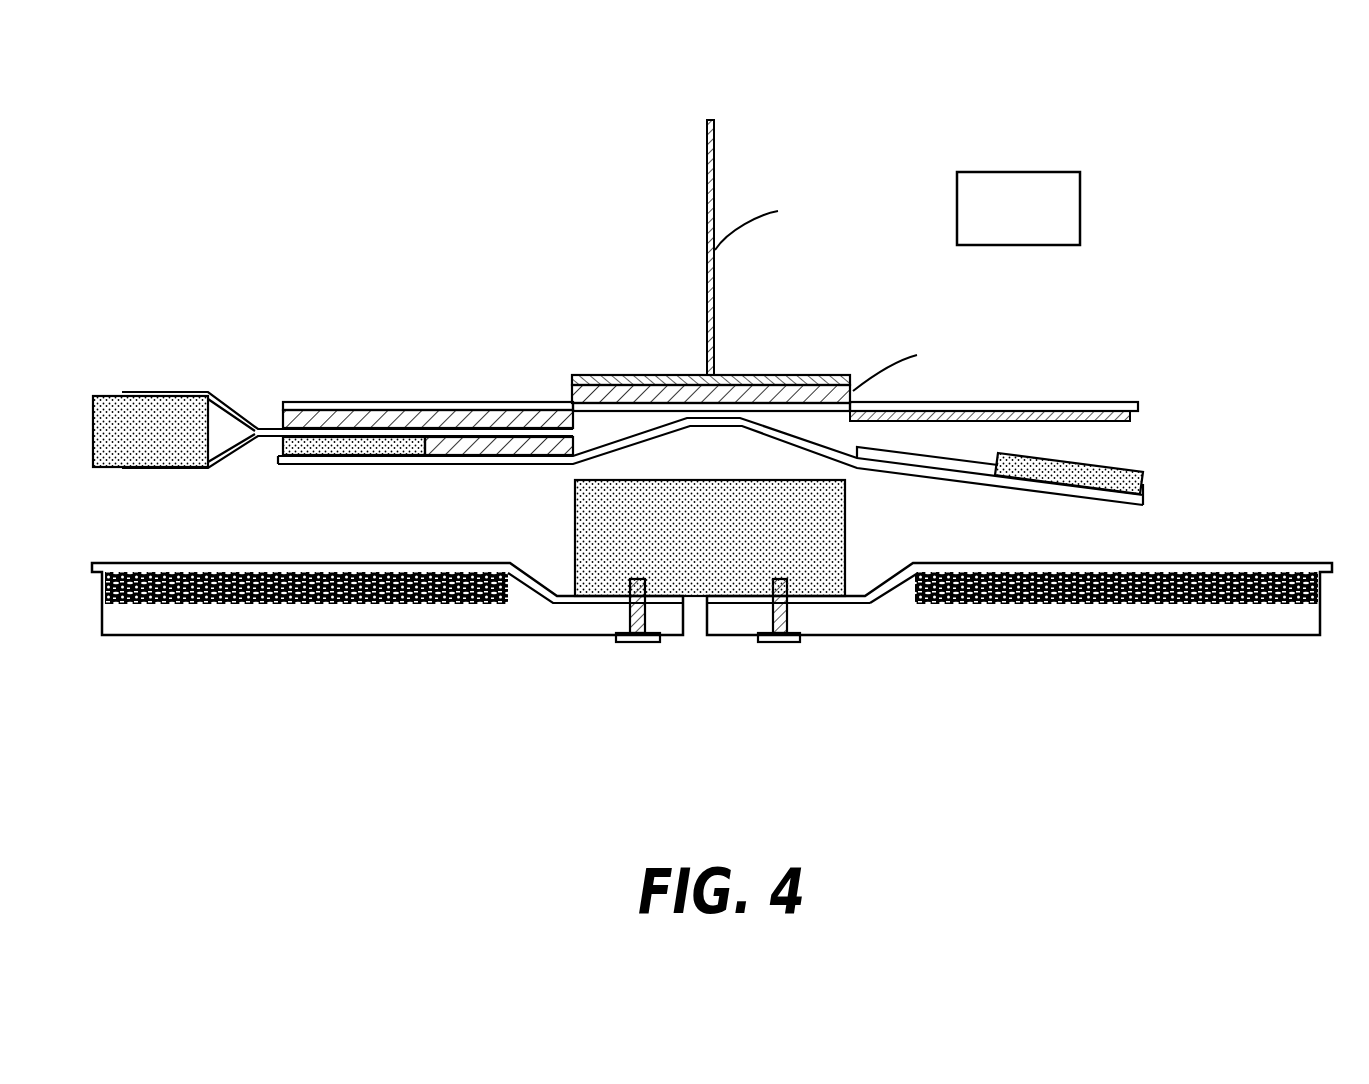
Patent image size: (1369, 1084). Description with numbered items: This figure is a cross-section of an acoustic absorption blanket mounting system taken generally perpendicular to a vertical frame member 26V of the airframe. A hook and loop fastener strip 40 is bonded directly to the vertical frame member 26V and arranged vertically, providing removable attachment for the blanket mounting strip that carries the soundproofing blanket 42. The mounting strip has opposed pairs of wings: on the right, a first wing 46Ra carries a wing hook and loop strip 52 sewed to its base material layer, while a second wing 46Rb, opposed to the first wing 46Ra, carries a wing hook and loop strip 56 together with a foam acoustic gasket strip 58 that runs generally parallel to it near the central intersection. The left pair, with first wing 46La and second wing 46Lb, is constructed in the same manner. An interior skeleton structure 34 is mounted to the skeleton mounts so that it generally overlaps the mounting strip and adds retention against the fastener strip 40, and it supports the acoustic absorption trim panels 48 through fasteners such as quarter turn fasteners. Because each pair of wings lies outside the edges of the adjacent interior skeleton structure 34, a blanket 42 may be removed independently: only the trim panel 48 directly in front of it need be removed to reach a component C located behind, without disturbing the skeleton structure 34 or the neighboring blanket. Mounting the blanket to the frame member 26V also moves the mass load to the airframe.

The vertical frame member 26V is at (713, 158).
The hook and loop fastener strip 40 is at (738, 374).
The component C is at (1081, 188).
The first wing of left pair of wings 46La is at (287, 401).
The second wing of left pair of wings 46Lb is at (394, 463).
The first wing 46Ra is at (1028, 402).
The second wing 46Rb is at (1147, 503).
The wing hook and loop strip 52 is at (385, 416).
The acoustic gasket strip 58 is at (325, 445).
The wing hook and loop strip 56 is at (500, 450).
The soundproofing blanket 42 is at (101, 397).
The interior skeleton structure 34 is at (723, 551).
The acoustic absorption trim panel 48 is at (520, 648).